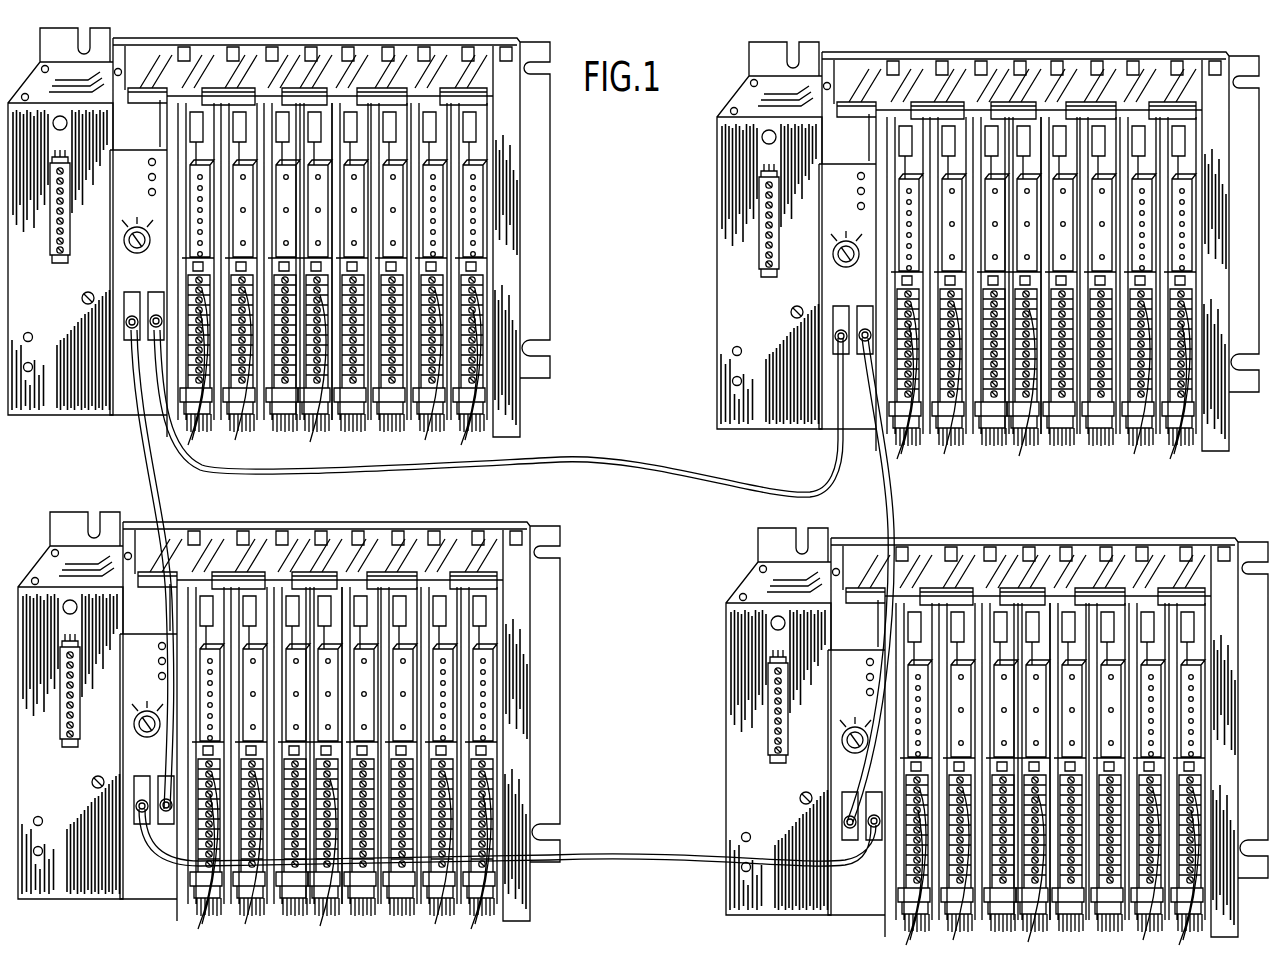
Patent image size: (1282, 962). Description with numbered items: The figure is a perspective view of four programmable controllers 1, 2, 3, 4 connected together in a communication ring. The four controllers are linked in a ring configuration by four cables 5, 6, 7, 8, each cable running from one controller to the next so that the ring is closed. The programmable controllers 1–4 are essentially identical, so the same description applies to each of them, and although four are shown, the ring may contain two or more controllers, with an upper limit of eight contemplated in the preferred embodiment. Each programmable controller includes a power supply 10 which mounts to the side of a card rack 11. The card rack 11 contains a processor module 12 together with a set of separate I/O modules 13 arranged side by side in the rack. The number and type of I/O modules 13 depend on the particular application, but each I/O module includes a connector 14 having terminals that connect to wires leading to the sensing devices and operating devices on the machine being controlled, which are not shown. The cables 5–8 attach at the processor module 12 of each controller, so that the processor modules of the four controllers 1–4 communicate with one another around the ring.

The programmable controller 1 is at (562, 195).
The programmable controller 2 is at (570, 548).
The programmable controller 3 is at (745, 560).
The programmable controller 4 is at (712, 246).
The cable 5 is at (151, 487).
The cable 6 is at (648, 852).
The cable 7 is at (891, 497).
The cable 8 is at (594, 462).
The power supply 10 is at (54, 299).
The card rack 11 is at (339, 38).
The processor module 12 is at (128, 422).
The I/O modules 13 is at (489, 68).
The connector 14 is at (445, 405).